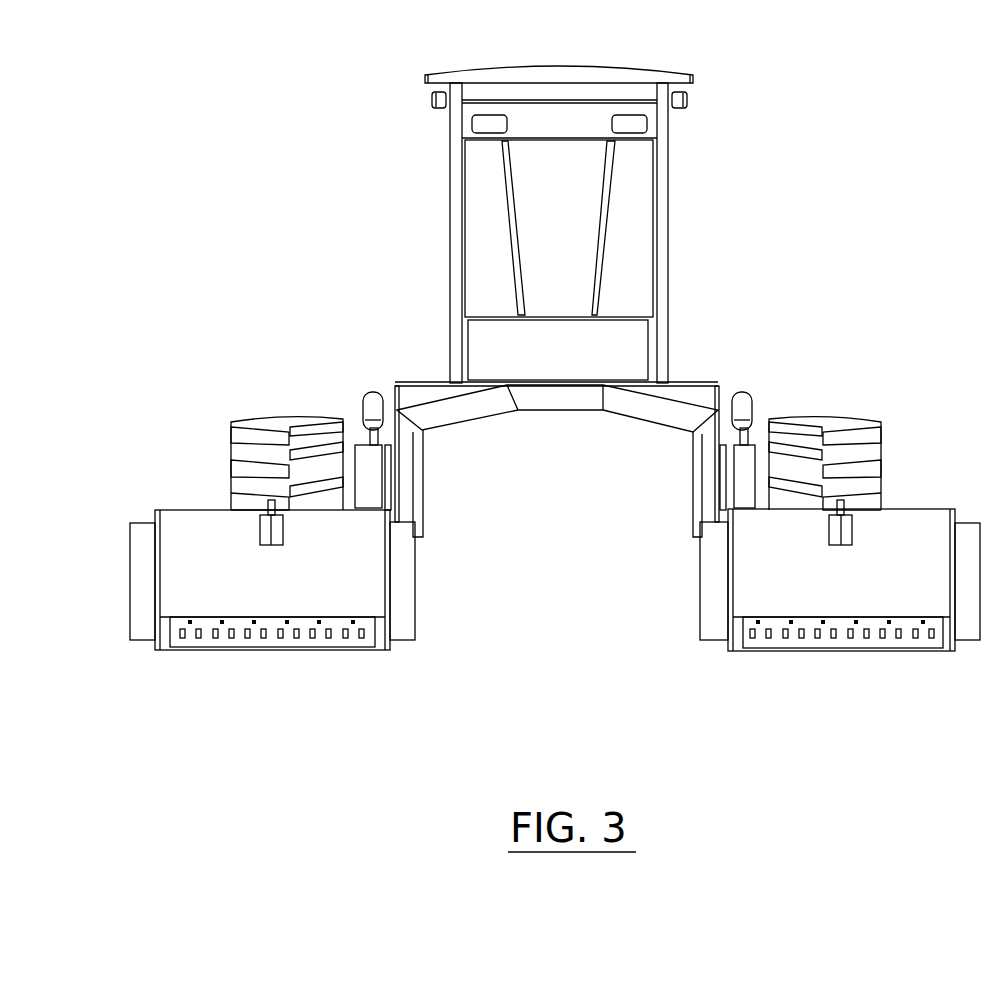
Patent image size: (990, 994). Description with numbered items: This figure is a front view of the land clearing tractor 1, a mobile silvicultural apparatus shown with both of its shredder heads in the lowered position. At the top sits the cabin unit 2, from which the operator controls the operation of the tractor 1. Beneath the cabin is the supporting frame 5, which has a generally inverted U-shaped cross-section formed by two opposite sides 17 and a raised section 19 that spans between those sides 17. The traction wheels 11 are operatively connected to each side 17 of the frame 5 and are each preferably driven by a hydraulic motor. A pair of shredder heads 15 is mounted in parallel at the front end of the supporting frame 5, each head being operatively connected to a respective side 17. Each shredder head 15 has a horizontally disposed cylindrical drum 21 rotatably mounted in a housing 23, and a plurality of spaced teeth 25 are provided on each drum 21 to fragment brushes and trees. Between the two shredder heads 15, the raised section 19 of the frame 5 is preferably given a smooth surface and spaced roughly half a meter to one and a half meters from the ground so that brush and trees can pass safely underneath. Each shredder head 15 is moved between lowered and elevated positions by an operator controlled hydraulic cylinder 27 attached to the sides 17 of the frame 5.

The land clearing tractor 1 is at (299, 163).
The cabin unit 2 is at (668, 198).
The supporting frame 5 is at (652, 428).
The traction wheels 11 is at (263, 420).
The shredder heads 15 is at (200, 525).
The opposite sides 17 is at (395, 383).
The raised section 19 is at (570, 413).
The cylindrical drum 21 is at (368, 643).
The housing 23 is at (708, 602).
The teeth 25 is at (323, 632).
The hydraulic cylinder 27 is at (363, 400).